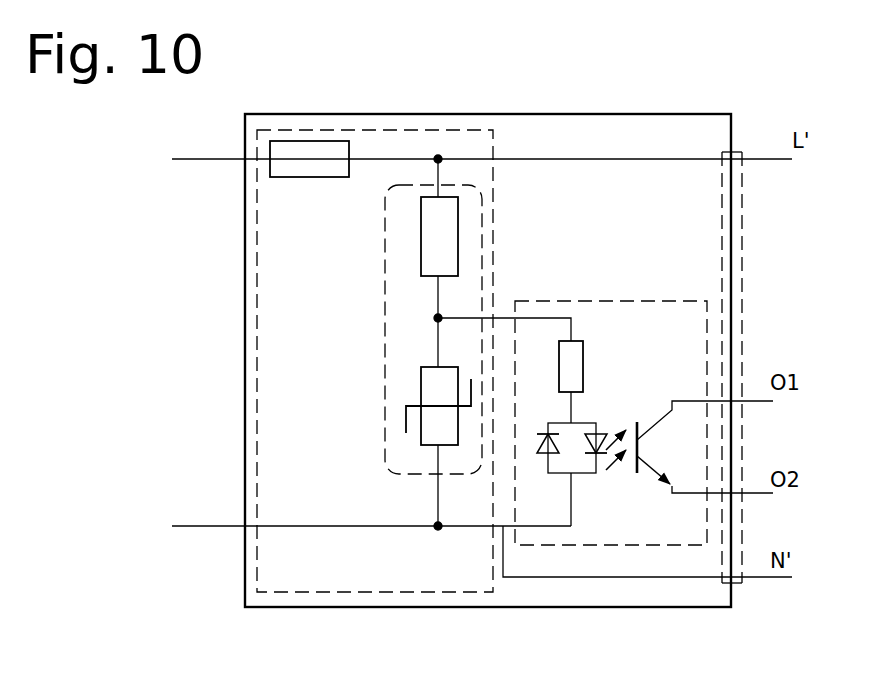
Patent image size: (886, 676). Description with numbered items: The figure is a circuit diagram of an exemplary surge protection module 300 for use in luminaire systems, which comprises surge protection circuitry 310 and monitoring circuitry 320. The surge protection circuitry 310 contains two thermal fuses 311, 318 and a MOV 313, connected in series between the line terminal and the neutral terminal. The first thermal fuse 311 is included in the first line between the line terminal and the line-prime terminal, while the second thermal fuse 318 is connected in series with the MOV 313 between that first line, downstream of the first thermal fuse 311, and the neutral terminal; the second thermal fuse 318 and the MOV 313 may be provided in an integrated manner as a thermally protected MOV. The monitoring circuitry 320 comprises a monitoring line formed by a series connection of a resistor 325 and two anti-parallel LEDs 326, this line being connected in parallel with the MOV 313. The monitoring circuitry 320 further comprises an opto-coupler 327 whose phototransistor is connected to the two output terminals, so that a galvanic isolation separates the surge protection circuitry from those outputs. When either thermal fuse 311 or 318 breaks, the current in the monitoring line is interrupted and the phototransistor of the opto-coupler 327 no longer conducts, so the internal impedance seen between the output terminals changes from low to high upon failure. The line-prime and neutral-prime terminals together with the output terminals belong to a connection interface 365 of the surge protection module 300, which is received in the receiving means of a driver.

The surge protection module 300 is at (585, 608).
The surge protection circuitry 310 is at (336, 592).
The first thermal fuse 311 is at (286, 152).
The MOV 313 is at (432, 378).
The second thermal fuse 318 is at (440, 237).
The monitoring circuitry 320 is at (577, 302).
The resistor 325 is at (568, 370).
The anti-parallel LEDs 326 is at (584, 482).
The opto-coupler 327 is at (623, 398).
The connection interface 365 is at (740, 225).